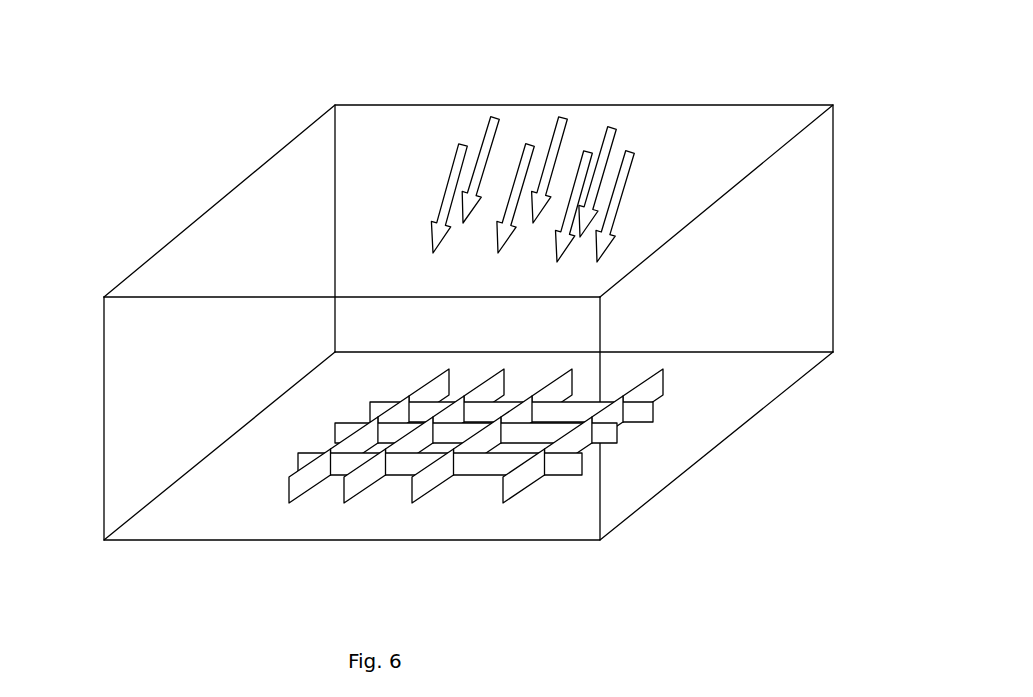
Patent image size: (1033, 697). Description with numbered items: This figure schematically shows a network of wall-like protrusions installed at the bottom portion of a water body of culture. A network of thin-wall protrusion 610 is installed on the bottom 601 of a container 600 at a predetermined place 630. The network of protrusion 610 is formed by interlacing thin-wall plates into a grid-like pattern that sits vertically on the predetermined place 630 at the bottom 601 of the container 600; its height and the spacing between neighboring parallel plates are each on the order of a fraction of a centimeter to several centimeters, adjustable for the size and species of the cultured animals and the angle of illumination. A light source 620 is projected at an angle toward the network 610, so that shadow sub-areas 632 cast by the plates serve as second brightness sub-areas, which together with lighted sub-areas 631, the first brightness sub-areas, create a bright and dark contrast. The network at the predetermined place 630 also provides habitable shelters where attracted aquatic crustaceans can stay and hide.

The container 600 is at (277, 152).
The bottom 601 is at (173, 523).
The network of thin-wall protrusion 610 is at (573, 448).
The light source 620 is at (572, 122).
The predetermined place 630 is at (426, 491).
The lighted sub-areas 631 is at (583, 545).
The shadow sub-areas 632 is at (393, 488).